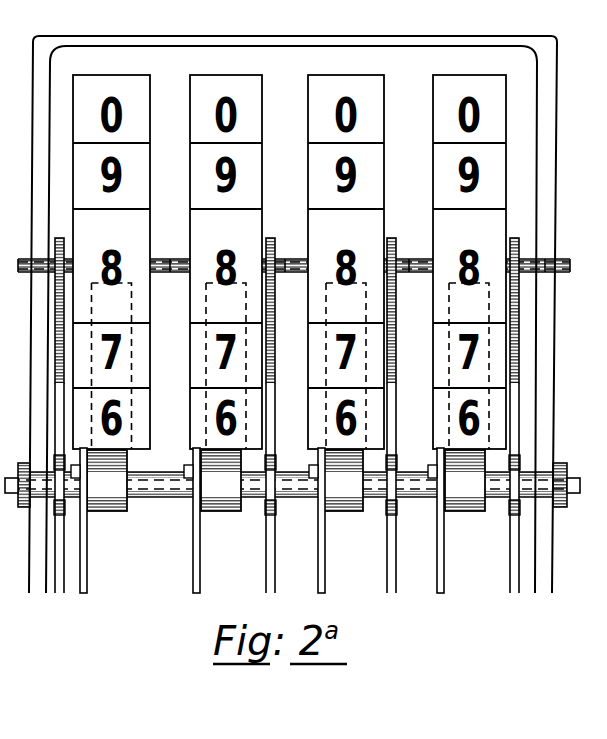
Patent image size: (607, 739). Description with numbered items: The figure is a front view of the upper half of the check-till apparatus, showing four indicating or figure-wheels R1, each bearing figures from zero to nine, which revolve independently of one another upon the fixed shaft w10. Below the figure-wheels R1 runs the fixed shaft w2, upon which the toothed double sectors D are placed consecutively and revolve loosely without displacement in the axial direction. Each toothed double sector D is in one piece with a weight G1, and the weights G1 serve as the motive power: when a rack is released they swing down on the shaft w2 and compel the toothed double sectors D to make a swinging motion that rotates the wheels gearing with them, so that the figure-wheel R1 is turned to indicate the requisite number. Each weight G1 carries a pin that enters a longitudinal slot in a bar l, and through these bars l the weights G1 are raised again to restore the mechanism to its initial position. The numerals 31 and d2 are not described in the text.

The figure-wheel R1 is at (150, 178).
The toothed rack 31 is at (60, 240).
The fixed shaft w10 is at (157, 262).
The fixed shaft w2 is at (150, 497).
The weight G1 is at (117, 511).
The bar l is at (87, 580).
The collar d2 is at (189, 468).
The toothed double sector D is at (273, 427).